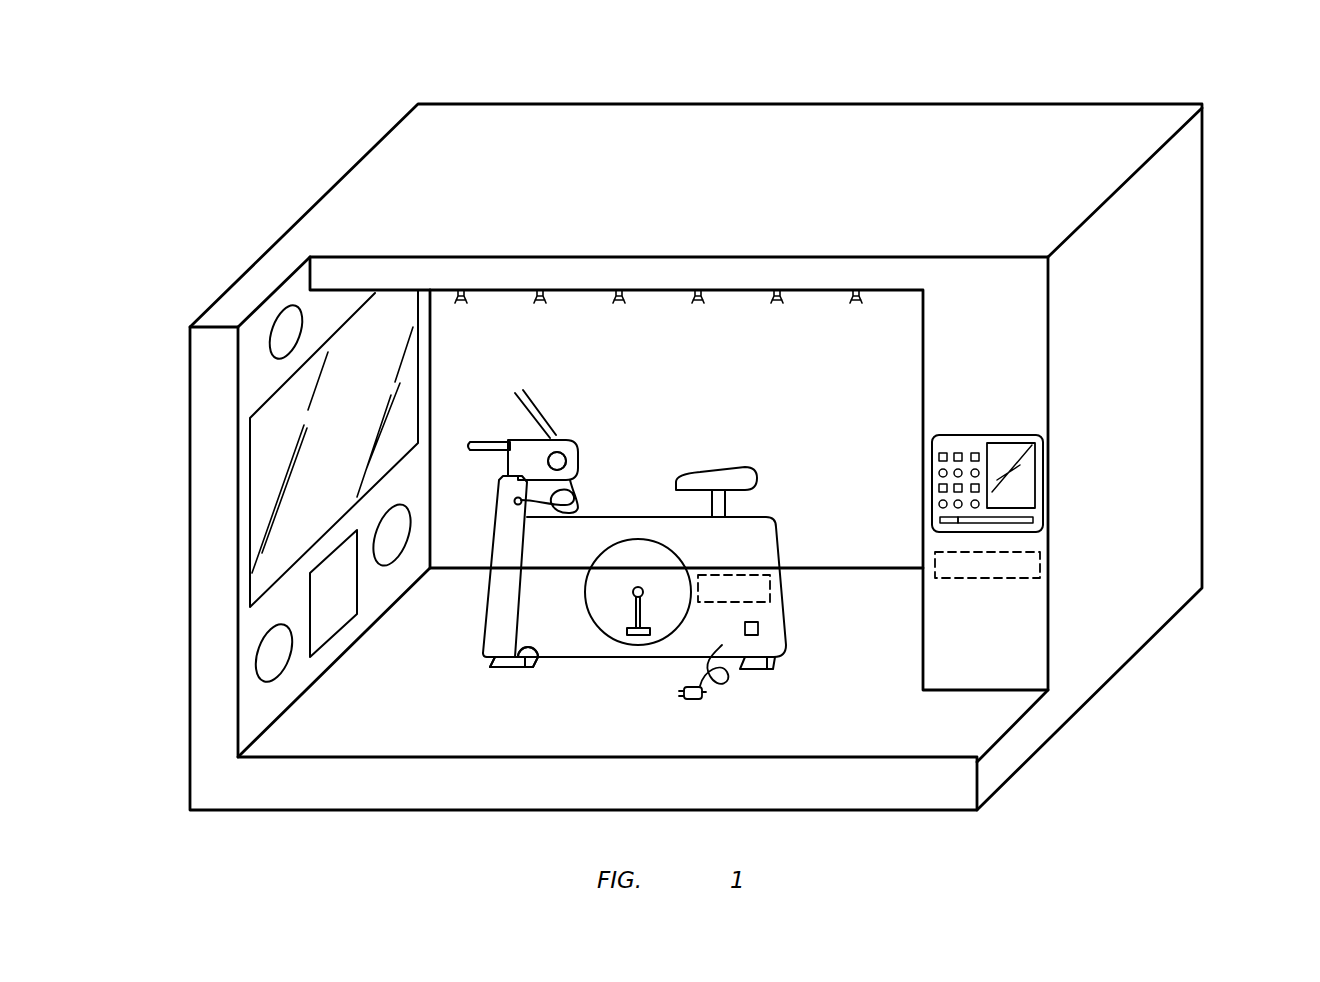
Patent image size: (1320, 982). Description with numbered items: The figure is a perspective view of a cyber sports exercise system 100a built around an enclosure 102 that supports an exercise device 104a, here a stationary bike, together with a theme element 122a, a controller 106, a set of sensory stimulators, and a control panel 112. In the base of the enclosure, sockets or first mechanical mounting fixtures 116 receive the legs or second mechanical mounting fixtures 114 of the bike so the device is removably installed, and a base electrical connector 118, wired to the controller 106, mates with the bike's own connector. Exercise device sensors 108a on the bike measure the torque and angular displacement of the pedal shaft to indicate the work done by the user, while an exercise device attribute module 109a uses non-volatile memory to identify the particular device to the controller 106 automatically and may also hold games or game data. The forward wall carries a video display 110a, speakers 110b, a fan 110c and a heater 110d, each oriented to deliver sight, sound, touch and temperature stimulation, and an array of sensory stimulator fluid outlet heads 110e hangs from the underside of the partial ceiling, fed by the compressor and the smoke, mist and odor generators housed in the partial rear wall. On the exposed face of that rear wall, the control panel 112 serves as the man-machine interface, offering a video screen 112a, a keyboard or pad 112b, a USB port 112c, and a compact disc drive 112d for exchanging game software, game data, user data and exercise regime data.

The cyber sports exercise system 100a is at (250, 230).
The enclosure 102 is at (1205, 250).
The exercise device 104a is at (768, 512).
The controller 106 is at (1022, 575).
The exercise device sensors 108a is at (752, 603).
The exercise device attribute module 109a is at (752, 636).
The video display 110a is at (258, 447).
The speakers 110b is at (262, 667).
The fan 110c is at (346, 599).
The heater 110d is at (262, 347).
The sensory stimulator fluid outlet heads 110e is at (546, 297).
The control panel 112 is at (1050, 445).
The video screen 112a is at (1020, 475).
The keyboard or pad 112b is at (952, 443).
The USB port 112c is at (950, 518).
The compact disc drive 112d is at (1020, 521).
The second mechanical mounting fixtures 114 is at (507, 666).
The first mechanical mounting fixtures 116 is at (528, 648).
The base electrical connector 118 is at (700, 702).
The theme element 122a is at (568, 446).